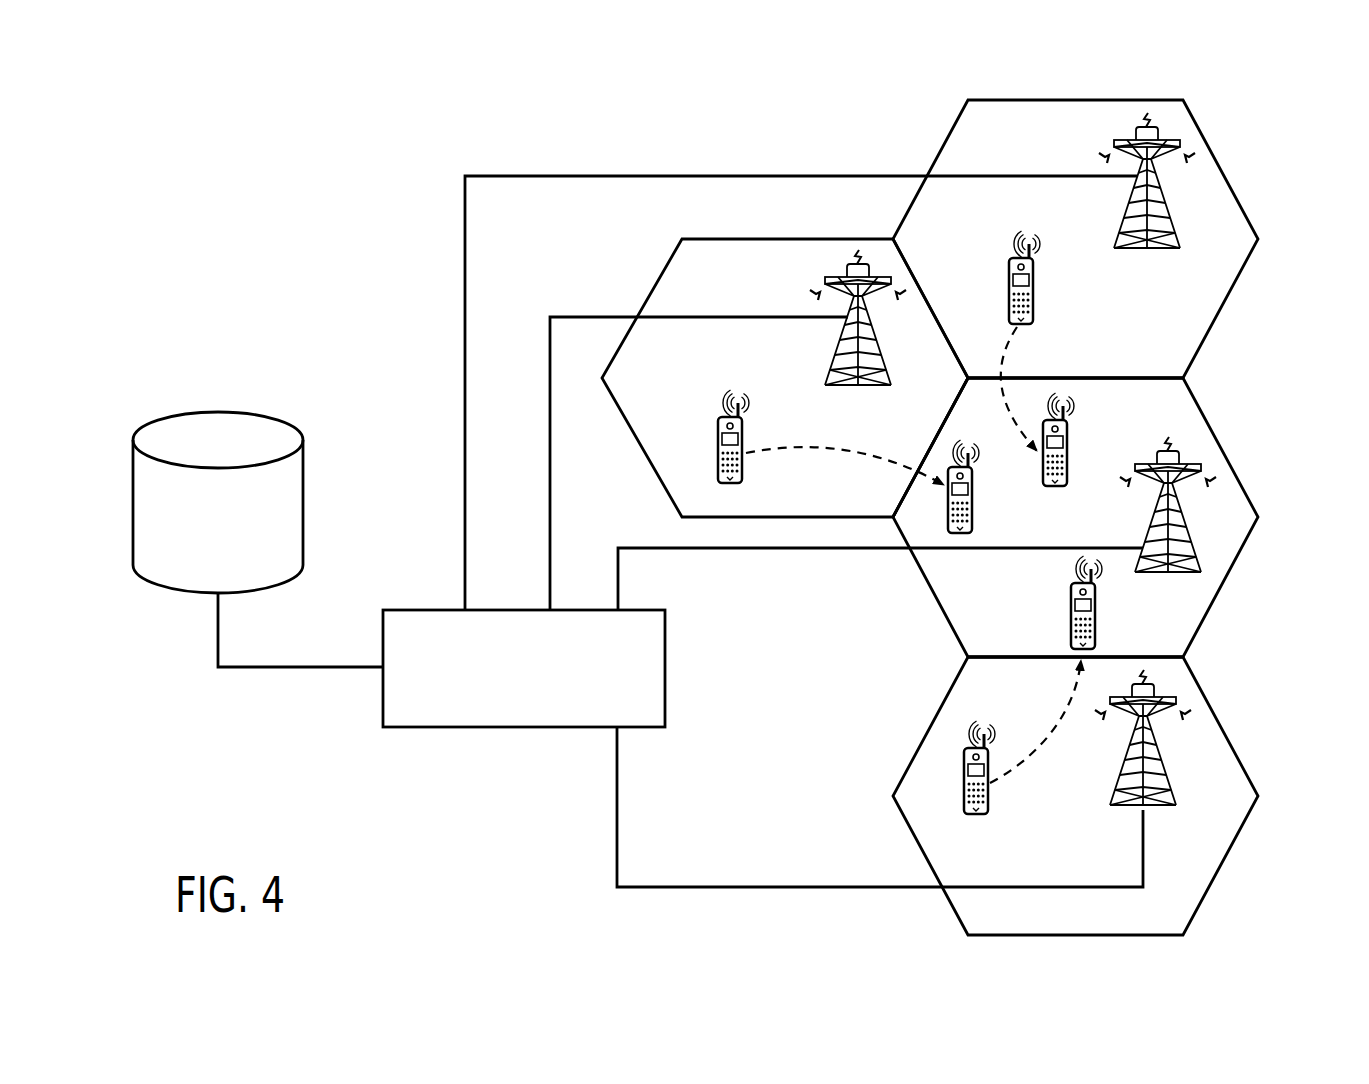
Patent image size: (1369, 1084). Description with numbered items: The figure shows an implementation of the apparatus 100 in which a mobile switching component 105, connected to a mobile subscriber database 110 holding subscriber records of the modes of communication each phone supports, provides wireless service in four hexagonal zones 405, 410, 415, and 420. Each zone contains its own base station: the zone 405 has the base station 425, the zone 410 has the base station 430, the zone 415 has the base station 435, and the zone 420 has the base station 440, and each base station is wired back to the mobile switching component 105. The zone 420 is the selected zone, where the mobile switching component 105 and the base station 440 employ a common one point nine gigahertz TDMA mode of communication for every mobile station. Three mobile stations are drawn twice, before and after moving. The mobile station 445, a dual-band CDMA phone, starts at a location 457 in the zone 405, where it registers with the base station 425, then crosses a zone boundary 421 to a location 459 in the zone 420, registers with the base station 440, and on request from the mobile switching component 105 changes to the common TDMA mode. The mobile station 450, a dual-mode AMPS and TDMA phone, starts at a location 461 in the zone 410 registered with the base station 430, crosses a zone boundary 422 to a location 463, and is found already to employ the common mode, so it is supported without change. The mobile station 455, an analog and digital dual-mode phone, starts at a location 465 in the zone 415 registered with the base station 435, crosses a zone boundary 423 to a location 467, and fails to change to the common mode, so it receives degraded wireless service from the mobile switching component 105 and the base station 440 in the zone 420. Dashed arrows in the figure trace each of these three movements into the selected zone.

The apparatus 100 is at (312, 113).
The mobile switching component 105 is at (449, 729).
The mobile subscriber database 110 is at (133, 503).
The zone 405 is at (757, 238).
The zone 410 is at (1075, 100).
The zone 415 is at (1220, 728).
The zone 420 is at (1220, 444).
The zone boundary 421 is at (922, 457).
The zone boundary 422 is at (1075, 378).
The zone boundary 423 is at (1137, 656).
The base station 425 is at (838, 284).
The base station 430 is at (1163, 250).
The base station 435 is at (1125, 768).
The base station 440 is at (1187, 552).
The mobile station 445 is at (731, 483).
The mobile station 450 is at (1036, 291).
The mobile station 455 is at (975, 814).
The location 457 is at (737, 434).
The location 459 is at (989, 516).
The location 461 is at (1036, 268).
The location 463 is at (1082, 456).
The location 465 is at (941, 787).
The location 467 is at (1060, 625).